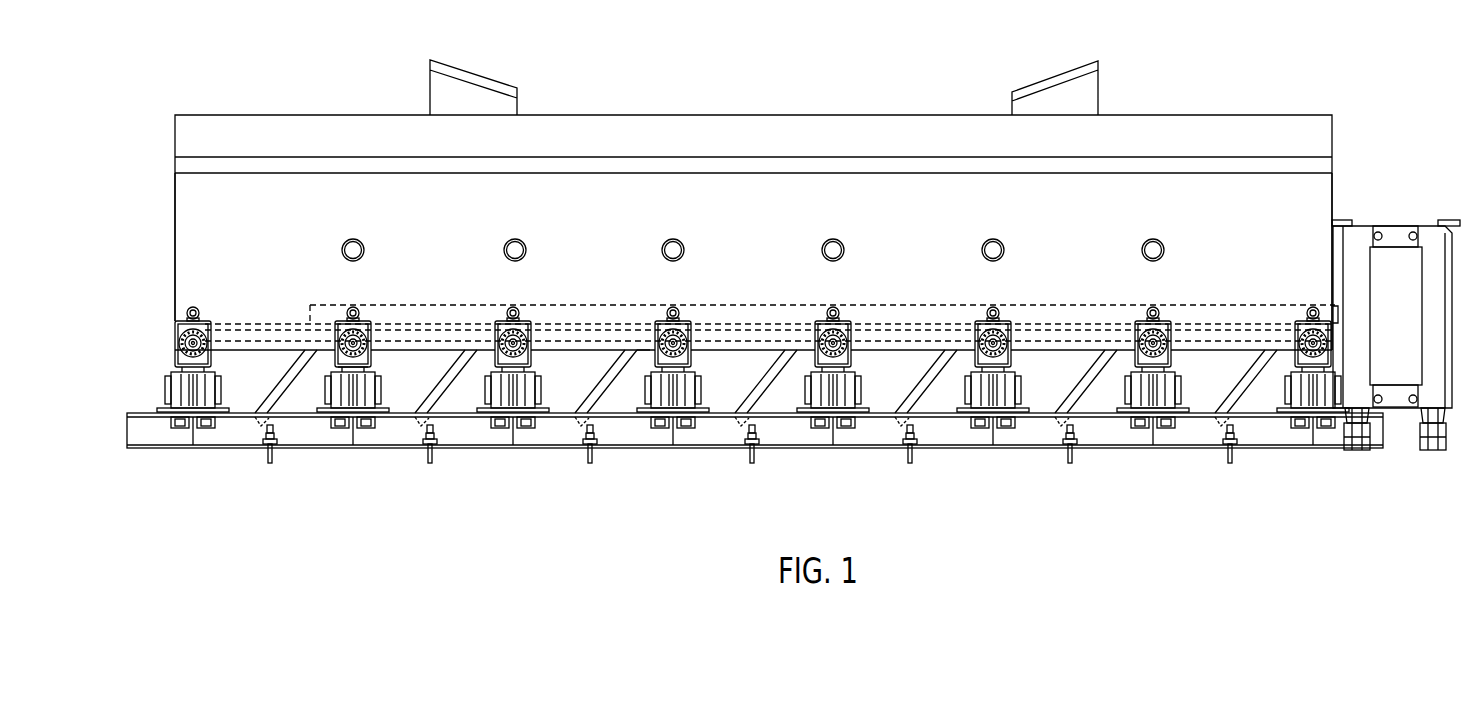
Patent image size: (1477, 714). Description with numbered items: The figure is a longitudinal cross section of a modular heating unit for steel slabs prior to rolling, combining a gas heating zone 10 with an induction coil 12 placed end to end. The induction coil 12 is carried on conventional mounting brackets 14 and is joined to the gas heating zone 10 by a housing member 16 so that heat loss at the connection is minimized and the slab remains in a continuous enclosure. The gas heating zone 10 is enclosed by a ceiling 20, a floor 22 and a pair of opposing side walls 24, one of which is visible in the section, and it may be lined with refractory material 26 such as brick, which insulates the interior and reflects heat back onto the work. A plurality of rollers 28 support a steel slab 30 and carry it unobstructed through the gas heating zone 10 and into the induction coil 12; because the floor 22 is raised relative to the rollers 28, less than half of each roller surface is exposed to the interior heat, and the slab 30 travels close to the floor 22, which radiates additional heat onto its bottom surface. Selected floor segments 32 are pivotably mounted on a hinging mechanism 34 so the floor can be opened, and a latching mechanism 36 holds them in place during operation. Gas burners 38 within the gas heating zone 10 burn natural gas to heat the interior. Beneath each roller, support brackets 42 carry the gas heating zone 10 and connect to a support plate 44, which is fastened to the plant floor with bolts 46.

The gas heating zone 10 is at (669, 162).
The induction coil 12 is at (1394, 225).
The mounting brackets 14 is at (1433, 450).
The housing member 16 is at (1345, 220).
The ceiling 20 is at (190, 173).
The floor 22 is at (237, 350).
The side walls 24 is at (205, 248).
The refractory material 26 is at (808, 195).
The rollers 28 is at (190, 339).
The steel slab 30 is at (893, 322).
The floor segments 32 is at (285, 392).
The hinging mechanism 34 is at (640, 350).
The latching mechanism 36 is at (372, 355).
The gas burners 38 is at (353, 238).
The support brackets 42 is at (192, 433).
The support plate 44 is at (945, 450).
The bolts 46 is at (754, 463).